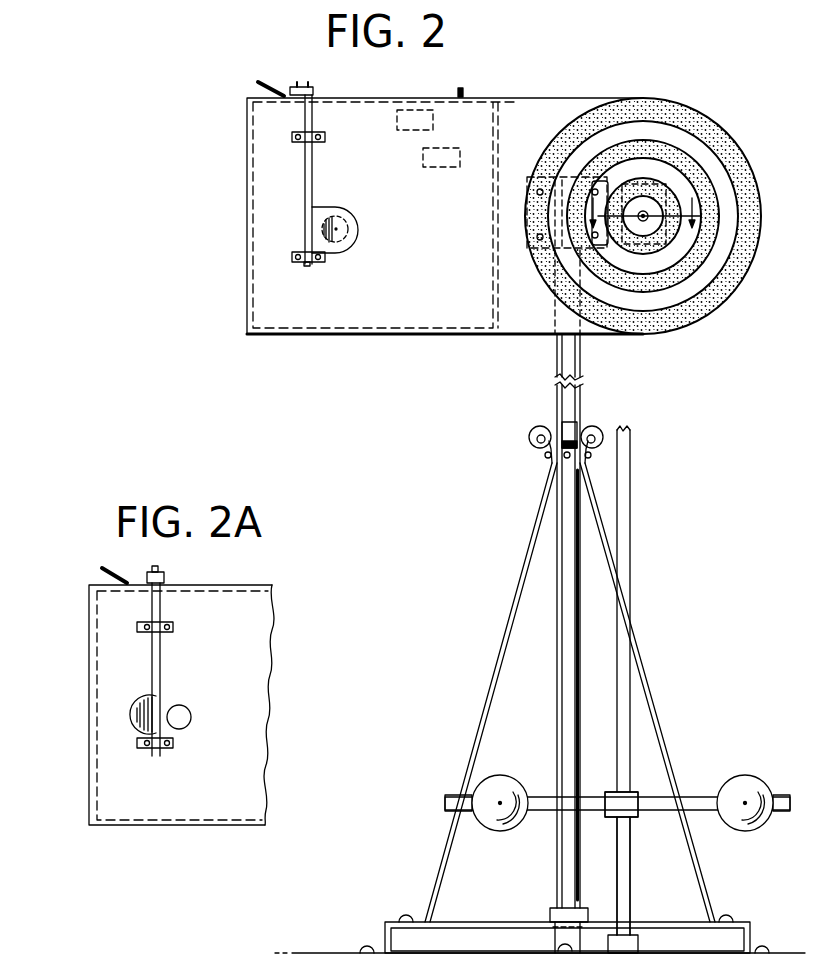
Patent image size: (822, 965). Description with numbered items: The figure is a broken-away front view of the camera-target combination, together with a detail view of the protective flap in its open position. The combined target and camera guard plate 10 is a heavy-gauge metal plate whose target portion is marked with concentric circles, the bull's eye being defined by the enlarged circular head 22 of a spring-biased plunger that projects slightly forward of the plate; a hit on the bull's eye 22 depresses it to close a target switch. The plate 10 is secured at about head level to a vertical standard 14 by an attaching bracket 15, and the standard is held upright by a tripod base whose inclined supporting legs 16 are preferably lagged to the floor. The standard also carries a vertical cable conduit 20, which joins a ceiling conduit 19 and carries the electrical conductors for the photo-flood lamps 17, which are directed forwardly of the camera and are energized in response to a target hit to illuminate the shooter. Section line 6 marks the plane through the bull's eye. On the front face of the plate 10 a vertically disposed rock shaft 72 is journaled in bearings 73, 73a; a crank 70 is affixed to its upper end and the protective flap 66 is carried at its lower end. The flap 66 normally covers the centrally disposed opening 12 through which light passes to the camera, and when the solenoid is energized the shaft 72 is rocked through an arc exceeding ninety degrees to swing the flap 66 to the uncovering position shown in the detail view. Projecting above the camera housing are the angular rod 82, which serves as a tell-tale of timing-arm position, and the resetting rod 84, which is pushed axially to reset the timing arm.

In FIG. 2, the section line 6- 6 is at (642, 213).
In FIG. 2, the combined target and camera guard plate 10 is at (400, 300).
In FIG. 2A, the combined target and camera guard plate 10 is at (243, 690).
In FIG. 2, the opening 12 is at (345, 230).
In FIG. 2A, the opening 12 is at (187, 719).
In FIG. 2, the standard 14 is at (568, 355).
In FIG. 2, the attaching bracket 15 is at (526, 175).
In FIG. 2, the inclined supporting legs 16 is at (490, 677).
In FIG. 2, the photo-flood lamps 17 is at (497, 792).
In FIG. 2, the ceiling conduit 19 is at (627, 942).
In FIG. 2, the vertical cable conduit 20 is at (622, 504).
In FIG. 2, the enlarged circular head 22 is at (648, 220).
In FIG. 2, the protective flap 66 is at (343, 214).
In FIG. 2A, the protective flap 66 is at (132, 718).
In FIG. 2, the crank 70 is at (315, 92).
In FIG. 2A, the crank 70 is at (163, 574).
In FIG. 2, the rock shaft 72 is at (305, 183).
In FIG. 2A, the rock shaft 72 is at (152, 676).
In FIG. 2, the bearing 73 is at (292, 138).
In FIG. 2A, the bearing 73 is at (137, 626).
In FIG. 2, the bearing 73a is at (292, 258).
In FIG. 2A, the bearing 73a is at (137, 745).
In FIG. 2, the angular rod 82 is at (463, 92).
In FIG. 2, the resetting rod 84 is at (268, 91).